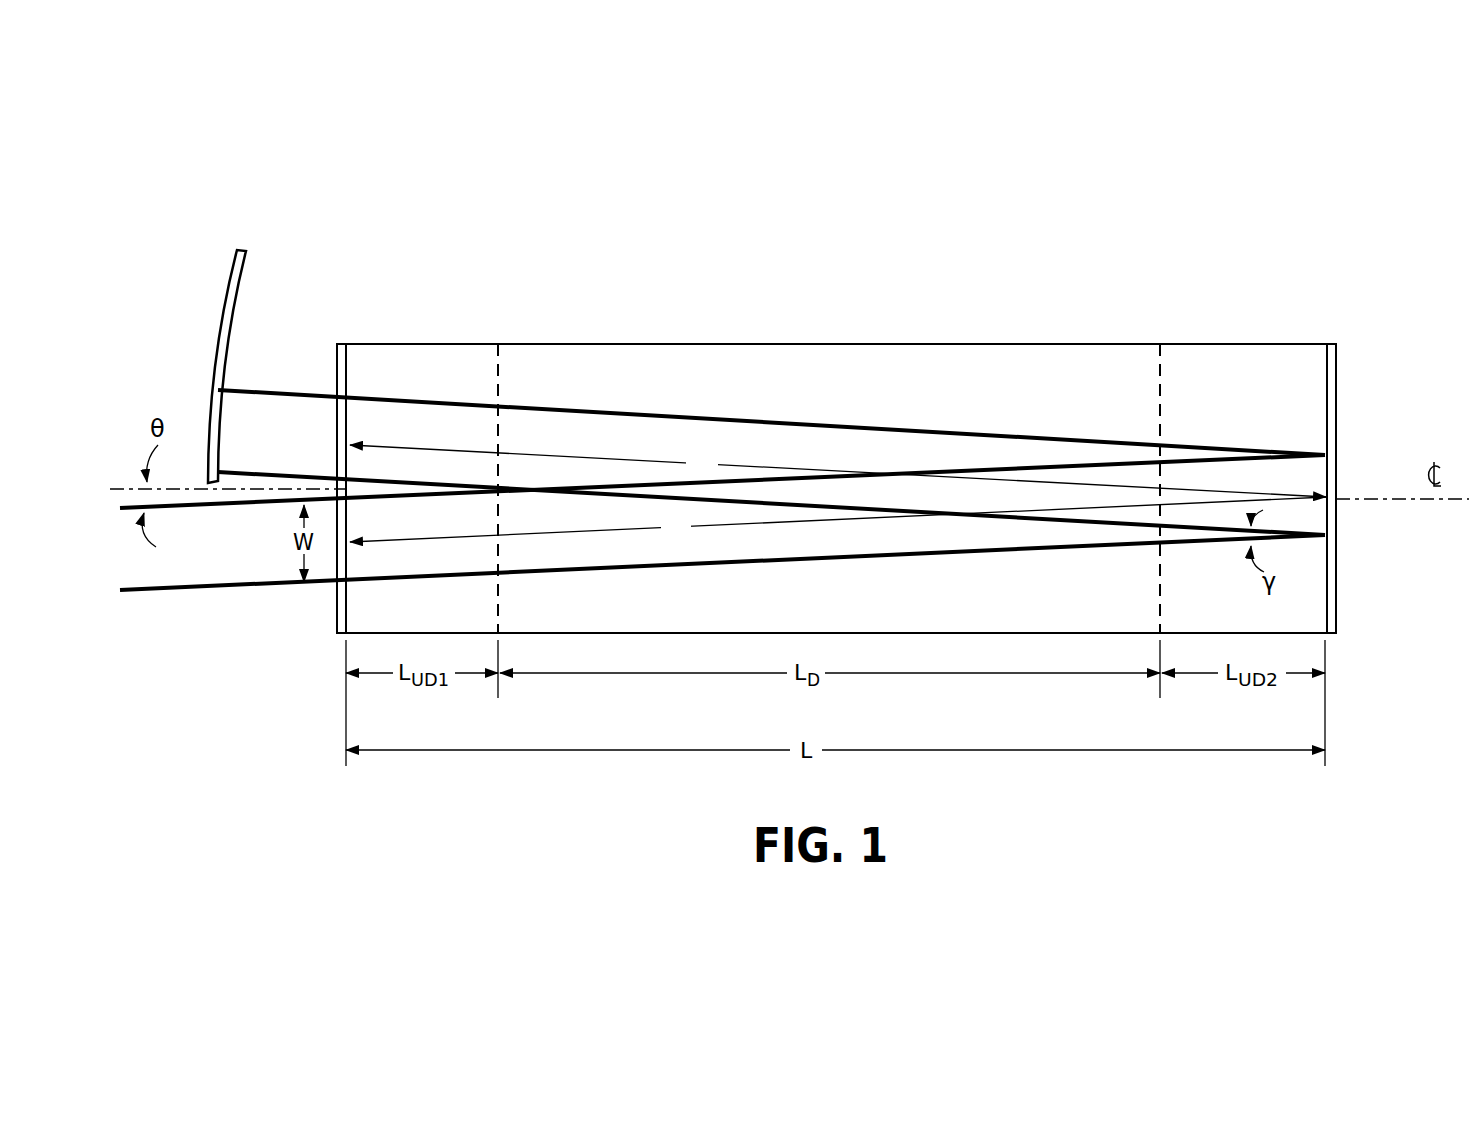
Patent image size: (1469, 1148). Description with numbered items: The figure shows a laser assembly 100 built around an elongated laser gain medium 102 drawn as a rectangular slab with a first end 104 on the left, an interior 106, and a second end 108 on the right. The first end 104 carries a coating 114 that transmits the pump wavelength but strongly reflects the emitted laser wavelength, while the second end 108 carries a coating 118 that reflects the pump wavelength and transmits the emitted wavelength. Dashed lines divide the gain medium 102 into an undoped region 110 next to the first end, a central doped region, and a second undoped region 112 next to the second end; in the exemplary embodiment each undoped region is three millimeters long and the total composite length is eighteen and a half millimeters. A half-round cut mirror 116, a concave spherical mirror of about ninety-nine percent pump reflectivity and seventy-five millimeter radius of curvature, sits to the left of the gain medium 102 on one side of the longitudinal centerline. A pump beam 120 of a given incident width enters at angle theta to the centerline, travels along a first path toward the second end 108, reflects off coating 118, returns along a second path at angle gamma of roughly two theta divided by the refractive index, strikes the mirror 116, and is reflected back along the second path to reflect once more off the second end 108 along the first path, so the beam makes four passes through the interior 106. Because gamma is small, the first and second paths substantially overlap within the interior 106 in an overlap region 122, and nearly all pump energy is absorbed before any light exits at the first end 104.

The laser assembly 100 is at (333, 172).
The laser gain medium 102 is at (972, 344).
The first end 104 is at (348, 358).
The interior 106 is at (858, 400).
The second end 108 is at (1325, 377).
The undoped region 110 is at (487, 384).
The undoped region 112 is at (1219, 392).
The coating 114 is at (342, 358).
The half-round cut mirror 116 is at (231, 259).
The coating 118 is at (1333, 363).
The pump beam 120 is at (198, 595).
The overlap region 122 is at (1006, 512).